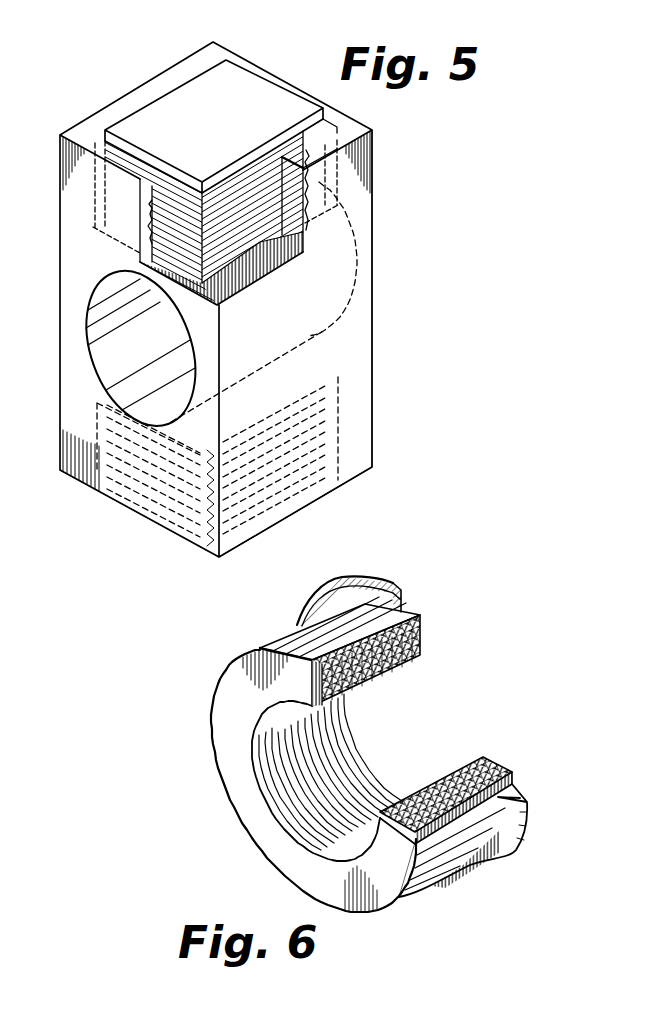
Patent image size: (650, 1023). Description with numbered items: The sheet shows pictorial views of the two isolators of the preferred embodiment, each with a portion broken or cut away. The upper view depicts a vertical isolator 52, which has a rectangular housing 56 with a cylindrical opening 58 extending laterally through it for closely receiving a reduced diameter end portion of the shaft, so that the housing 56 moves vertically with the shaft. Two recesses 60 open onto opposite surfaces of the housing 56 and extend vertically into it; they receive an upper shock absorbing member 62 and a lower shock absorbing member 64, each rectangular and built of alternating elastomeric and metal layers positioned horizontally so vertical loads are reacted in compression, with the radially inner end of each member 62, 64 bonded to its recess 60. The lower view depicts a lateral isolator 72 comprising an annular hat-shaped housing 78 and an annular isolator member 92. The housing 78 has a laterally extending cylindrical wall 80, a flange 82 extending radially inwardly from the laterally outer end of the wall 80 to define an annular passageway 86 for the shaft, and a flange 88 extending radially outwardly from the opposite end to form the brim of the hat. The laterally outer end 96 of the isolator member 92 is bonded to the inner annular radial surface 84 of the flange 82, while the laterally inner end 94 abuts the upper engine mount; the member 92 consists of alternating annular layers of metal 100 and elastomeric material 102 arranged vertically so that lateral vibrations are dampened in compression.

In FIG. 5, the vertical isolator 52 is at (402, 199).
In FIG. 5, the rectangular housing 56 is at (375, 347).
In FIG. 5, the cylindrical opening 58 is at (114, 334).
In FIG. 5, the recess 60 is at (100, 142).
In FIG. 5, the upper shock absorbing member 62 is at (256, 80).
In FIG. 5, the lower shock absorbing member 64 is at (165, 528).
In FIG. 6, the lateral isolator 72 is at (184, 773).
In FIG. 6, the annular hat-shaped housing 78 is at (410, 880).
In FIG. 6, the cylindrical wall 80 is at (443, 878).
In FIG. 6, the vertical flange 82 is at (343, 882).
In FIG. 6, the inner annular radial surface 84 is at (300, 626).
In FIG. 6, the annular passageway 86 is at (273, 803).
In FIG. 6, the vertical flange 88 is at (395, 584).
In FIG. 6, the annular isolator member 92 is at (375, 770).
In FIG. 6, the laterally inner end 94 is at (420, 630).
In FIG. 6, the laterally outer end 96 is at (362, 715).
In FIG. 6, the metal layers 100 is at (472, 762).
In FIG. 6, the elastomeric material 102 is at (404, 690).